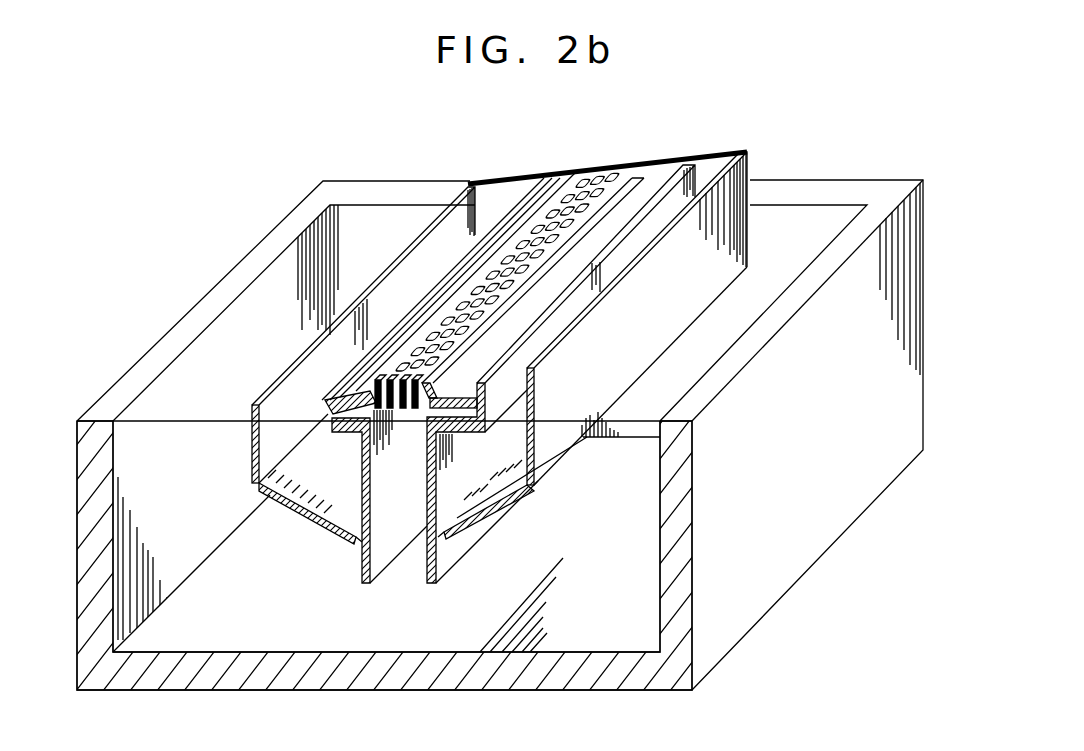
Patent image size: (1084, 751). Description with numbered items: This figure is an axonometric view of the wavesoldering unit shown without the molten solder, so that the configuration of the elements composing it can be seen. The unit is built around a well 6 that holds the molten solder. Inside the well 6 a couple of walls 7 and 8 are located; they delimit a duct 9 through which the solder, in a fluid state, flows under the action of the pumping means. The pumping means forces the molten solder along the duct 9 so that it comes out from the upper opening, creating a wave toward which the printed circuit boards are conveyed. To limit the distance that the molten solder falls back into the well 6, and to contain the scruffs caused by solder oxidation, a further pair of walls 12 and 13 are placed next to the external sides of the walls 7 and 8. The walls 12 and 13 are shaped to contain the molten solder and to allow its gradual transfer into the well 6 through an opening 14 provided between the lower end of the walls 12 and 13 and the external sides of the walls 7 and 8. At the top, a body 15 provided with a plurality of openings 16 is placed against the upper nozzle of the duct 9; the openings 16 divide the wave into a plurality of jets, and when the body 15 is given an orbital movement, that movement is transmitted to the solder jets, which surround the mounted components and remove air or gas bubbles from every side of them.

The well 6 is at (792, 586).
The wall 7 is at (443, 570).
The wall 8 is at (360, 574).
The duct 9 is at (407, 572).
The wall 12 is at (526, 492).
The wall 13 is at (260, 493).
The opening 14 is at (358, 541).
The body 15 is at (418, 412).
The openings 16 is at (611, 170).